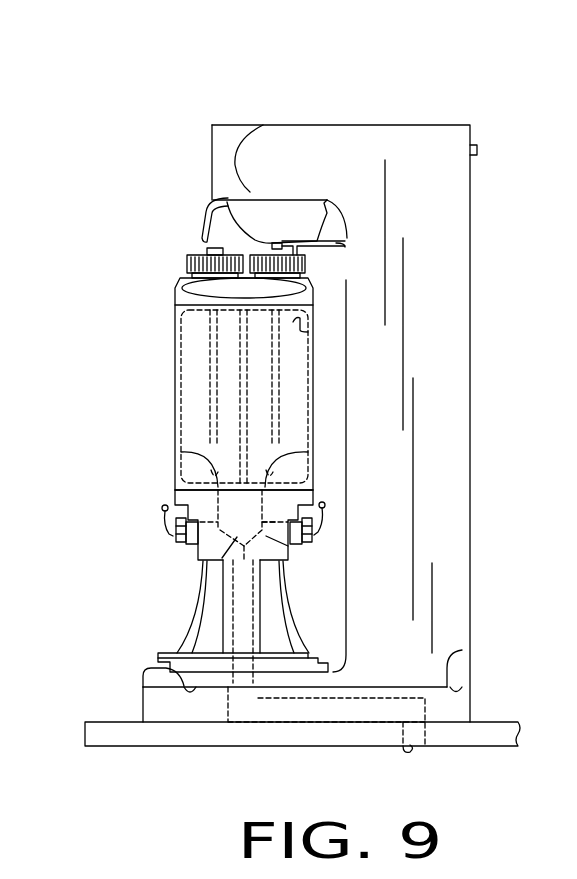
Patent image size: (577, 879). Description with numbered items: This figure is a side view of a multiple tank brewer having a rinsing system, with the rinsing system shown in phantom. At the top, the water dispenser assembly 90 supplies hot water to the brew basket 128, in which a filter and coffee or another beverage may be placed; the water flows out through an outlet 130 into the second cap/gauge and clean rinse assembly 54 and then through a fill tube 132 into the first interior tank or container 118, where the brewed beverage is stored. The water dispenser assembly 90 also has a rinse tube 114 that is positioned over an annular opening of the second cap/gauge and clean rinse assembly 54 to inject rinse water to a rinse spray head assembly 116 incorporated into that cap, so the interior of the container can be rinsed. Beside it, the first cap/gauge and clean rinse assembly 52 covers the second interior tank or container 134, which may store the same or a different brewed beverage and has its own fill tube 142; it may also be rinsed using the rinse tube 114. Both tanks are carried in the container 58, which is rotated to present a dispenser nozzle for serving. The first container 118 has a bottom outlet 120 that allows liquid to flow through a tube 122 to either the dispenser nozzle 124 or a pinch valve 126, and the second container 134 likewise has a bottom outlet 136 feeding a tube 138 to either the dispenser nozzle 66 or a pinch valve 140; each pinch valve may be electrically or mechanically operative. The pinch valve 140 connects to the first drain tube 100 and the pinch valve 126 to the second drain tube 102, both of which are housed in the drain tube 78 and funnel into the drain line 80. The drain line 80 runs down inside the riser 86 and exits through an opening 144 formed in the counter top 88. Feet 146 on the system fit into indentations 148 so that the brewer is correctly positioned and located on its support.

The water dispenser assembly 90 is at (373, 115).
The brew basket 128 is at (275, 218).
The second cap/gauge and clean rinse assembly 54 is at (215, 215).
The outlet 130 is at (305, 238).
The rinse tube 114 is at (336, 247).
The first cap/gauge and clean rinse assembly 52 is at (190, 266).
The container 58 is at (175, 383).
The second interior tank or container 134 is at (193, 337).
The rinse spray head assembly 116 is at (272, 365).
The fill tube 132 is at (306, 333).
The first interior tank or container 118 is at (295, 410).
The fill tube 142 is at (215, 416).
The bottom outlet 136 is at (216, 452).
The bottom outlet 120 is at (300, 452).
The tube 138 is at (178, 488).
The pinch valve 140 is at (200, 552).
The tube 122 is at (270, 505).
The dispenser nozzle 66 is at (165, 526).
The second drain tube 102 is at (265, 513).
The dispenser nozzle 124 is at (318, 541).
The first drain tube 100 is at (222, 565).
The pinch valve 126 is at (267, 538).
The drain tube 78 is at (224, 628).
The feet 146 is at (172, 670).
The indentations 148 is at (190, 694).
The riser 86 is at (142, 712).
The counter top 88 is at (85, 733).
The drain line 80 is at (380, 718).
The opening 144 is at (410, 758).